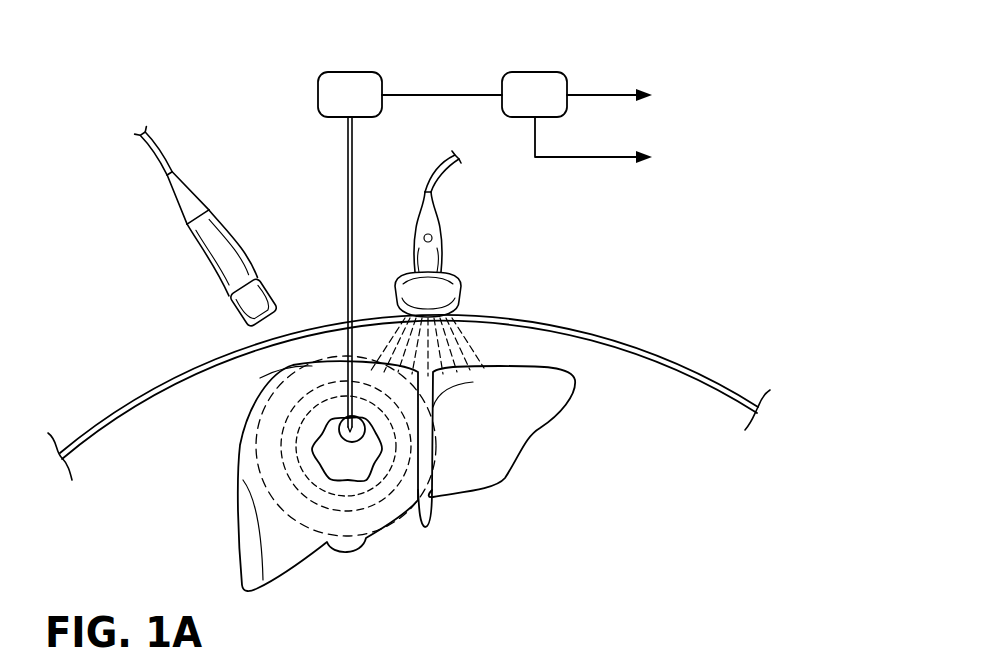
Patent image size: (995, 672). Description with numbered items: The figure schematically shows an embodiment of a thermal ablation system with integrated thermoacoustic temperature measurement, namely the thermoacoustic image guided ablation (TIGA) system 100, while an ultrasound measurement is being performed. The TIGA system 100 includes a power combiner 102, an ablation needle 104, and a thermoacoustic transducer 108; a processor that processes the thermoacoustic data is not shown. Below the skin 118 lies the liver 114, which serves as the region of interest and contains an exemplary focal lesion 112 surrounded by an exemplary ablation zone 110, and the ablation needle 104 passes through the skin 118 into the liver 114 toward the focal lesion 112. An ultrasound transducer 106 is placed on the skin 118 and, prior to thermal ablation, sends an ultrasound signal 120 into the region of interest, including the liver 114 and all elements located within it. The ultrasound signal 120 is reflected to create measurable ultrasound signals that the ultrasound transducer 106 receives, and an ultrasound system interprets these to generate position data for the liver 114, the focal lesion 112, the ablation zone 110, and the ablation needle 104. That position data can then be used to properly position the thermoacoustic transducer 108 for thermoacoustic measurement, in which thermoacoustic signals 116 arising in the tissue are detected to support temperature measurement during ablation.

The thermoacoustic image guided ablation (TIGA) system 100 is at (227, 122).
The power combiner 102 is at (533, 72).
The ablation needle 104 is at (348, 152).
The ultrasound transducer 106 is at (458, 293).
The thermoacoustic transducer 108 is at (230, 302).
The ablation zone 110 is at (362, 443).
The focal lesion 112 is at (355, 468).
The liver 114 is at (235, 497).
The thermoacoustic signals 116 is at (250, 447).
The skin 118 is at (573, 328).
The ultrasound signal 120 is at (478, 340).